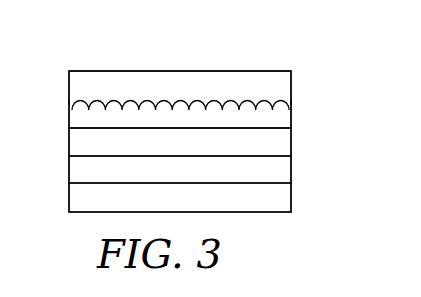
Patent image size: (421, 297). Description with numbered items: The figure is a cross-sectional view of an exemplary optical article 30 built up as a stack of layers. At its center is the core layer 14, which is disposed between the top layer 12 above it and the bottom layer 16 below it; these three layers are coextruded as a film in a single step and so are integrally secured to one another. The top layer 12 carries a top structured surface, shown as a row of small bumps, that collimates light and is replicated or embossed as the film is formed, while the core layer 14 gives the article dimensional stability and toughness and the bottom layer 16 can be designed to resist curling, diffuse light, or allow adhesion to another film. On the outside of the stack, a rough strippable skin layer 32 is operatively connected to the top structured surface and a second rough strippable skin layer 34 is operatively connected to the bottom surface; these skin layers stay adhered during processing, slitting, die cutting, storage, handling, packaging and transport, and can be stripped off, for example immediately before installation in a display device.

The optical article 30 is at (256, 51).
The rough strippable skin layer 32 is at (281, 84).
The top layer 12 is at (281, 112).
The core layer 14 is at (281, 142).
The bottom layer 16 is at (281, 172).
The rough strippable skin layer 34 is at (281, 202).